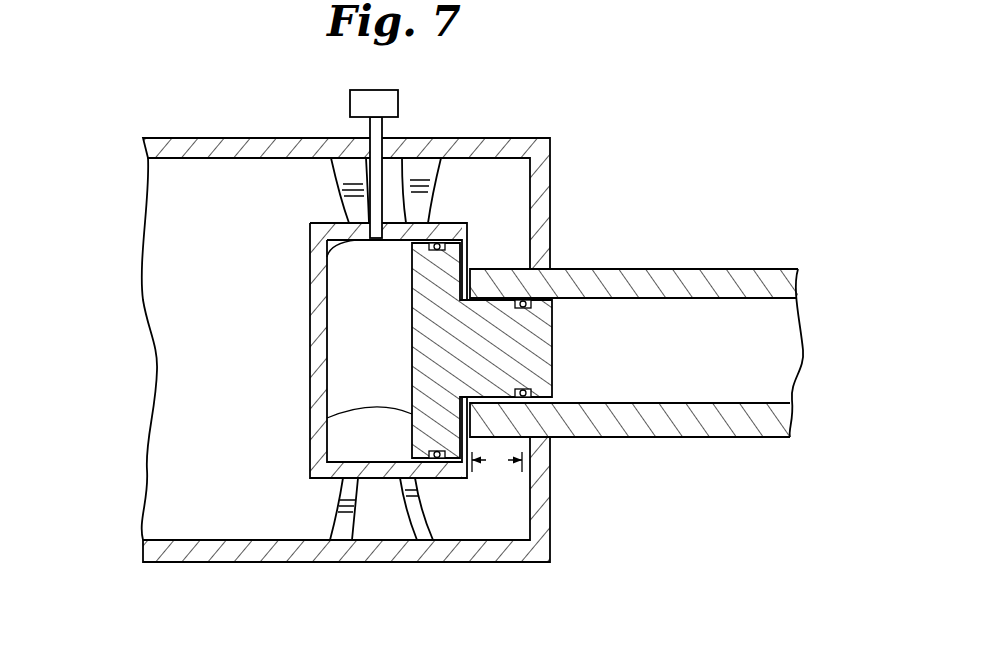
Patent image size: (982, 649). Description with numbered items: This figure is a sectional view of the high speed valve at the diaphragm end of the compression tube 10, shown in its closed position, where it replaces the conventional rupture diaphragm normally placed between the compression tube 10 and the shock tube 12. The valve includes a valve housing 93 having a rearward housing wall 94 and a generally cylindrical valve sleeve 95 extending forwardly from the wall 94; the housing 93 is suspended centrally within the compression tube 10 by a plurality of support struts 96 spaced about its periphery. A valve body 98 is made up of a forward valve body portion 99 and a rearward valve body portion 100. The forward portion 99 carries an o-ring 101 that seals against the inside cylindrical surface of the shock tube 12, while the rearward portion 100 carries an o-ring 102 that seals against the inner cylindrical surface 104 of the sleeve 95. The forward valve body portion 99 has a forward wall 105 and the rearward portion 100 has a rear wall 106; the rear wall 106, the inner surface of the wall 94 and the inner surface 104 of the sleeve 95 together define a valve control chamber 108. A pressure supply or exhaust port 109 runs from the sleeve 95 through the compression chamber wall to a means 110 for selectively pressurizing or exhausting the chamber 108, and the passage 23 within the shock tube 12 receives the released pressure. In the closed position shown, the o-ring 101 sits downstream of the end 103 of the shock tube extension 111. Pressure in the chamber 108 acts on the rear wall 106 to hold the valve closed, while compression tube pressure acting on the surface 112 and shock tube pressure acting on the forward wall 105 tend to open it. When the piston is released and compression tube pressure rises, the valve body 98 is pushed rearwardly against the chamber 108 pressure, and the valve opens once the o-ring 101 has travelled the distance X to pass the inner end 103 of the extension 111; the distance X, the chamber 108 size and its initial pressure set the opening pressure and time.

The compression tube 10 is at (530, 143).
The shock tube 12 is at (725, 278).
The tube passage 23 is at (733, 410).
The valve housing 93 is at (298, 284).
The rearward housing wall 94 is at (327, 388).
The valve sleeve 95 is at (455, 225).
The support struts 96 is at (335, 178).
The valve body 98 is at (480, 347).
The forward valve body portion 99 is at (530, 363).
The rearward valve body portion 100 is at (310, 303).
The o-ring 101 is at (553, 347).
The o-ring 102 is at (440, 241).
The end of shock tube extension 103 is at (462, 290).
The inner cylindrical surface 104 is at (310, 256).
The forward wall 105 is at (553, 348).
The rear wall 106 is at (327, 420).
The valve control chamber 108 is at (343, 352).
The pressure supply or exhaust port 109 is at (369, 147).
The means for selectively providing or exhausting pressure 110 is at (390, 97).
The shock tube extension 111 is at (555, 404).
The surface 112 is at (532, 418).
The distance X is at (498, 462).